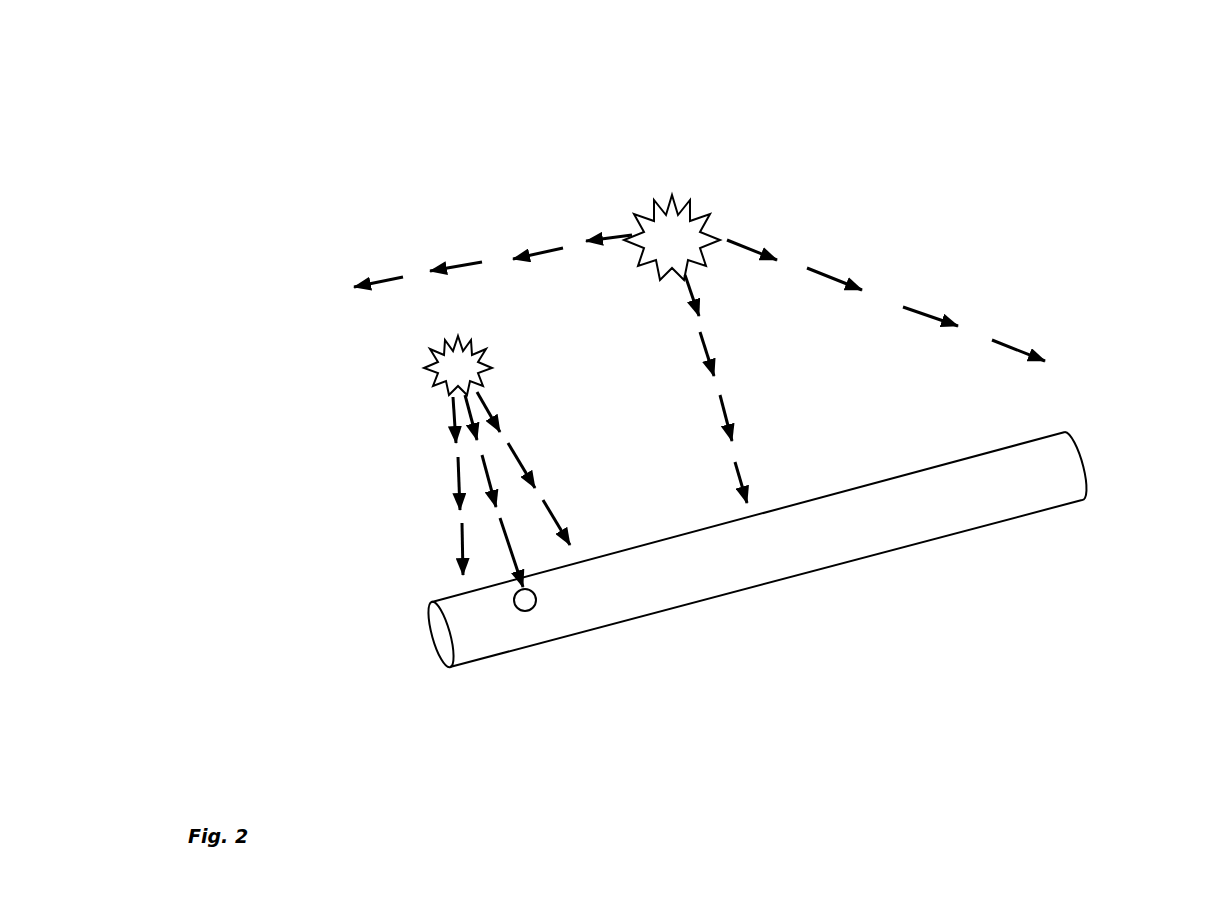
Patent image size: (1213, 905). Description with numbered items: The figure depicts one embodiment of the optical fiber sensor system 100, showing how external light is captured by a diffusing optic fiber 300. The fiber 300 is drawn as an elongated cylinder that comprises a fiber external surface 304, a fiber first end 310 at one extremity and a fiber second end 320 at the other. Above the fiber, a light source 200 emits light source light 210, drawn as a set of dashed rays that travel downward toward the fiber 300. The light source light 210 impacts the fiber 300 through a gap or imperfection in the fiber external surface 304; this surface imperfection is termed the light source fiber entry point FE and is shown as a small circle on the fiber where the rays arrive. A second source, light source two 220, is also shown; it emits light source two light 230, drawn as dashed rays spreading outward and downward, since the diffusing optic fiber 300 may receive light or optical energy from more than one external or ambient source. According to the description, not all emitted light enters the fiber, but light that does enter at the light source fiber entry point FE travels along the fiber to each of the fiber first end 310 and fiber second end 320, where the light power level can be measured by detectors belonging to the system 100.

The optical fiber sensor system 100 is at (312, 108).
The light source 200 is at (407, 373).
The light source light 210 is at (437, 500).
The light source two 220 is at (707, 170).
The light source two light 230 is at (537, 225).
The diffusing optic fiber 300 is at (818, 616).
The fiber external surface 304 is at (510, 625).
The fiber first end 310 is at (458, 690).
The fiber second end 320 is at (1088, 518).
The light source fiber entry point FE is at (545, 612).